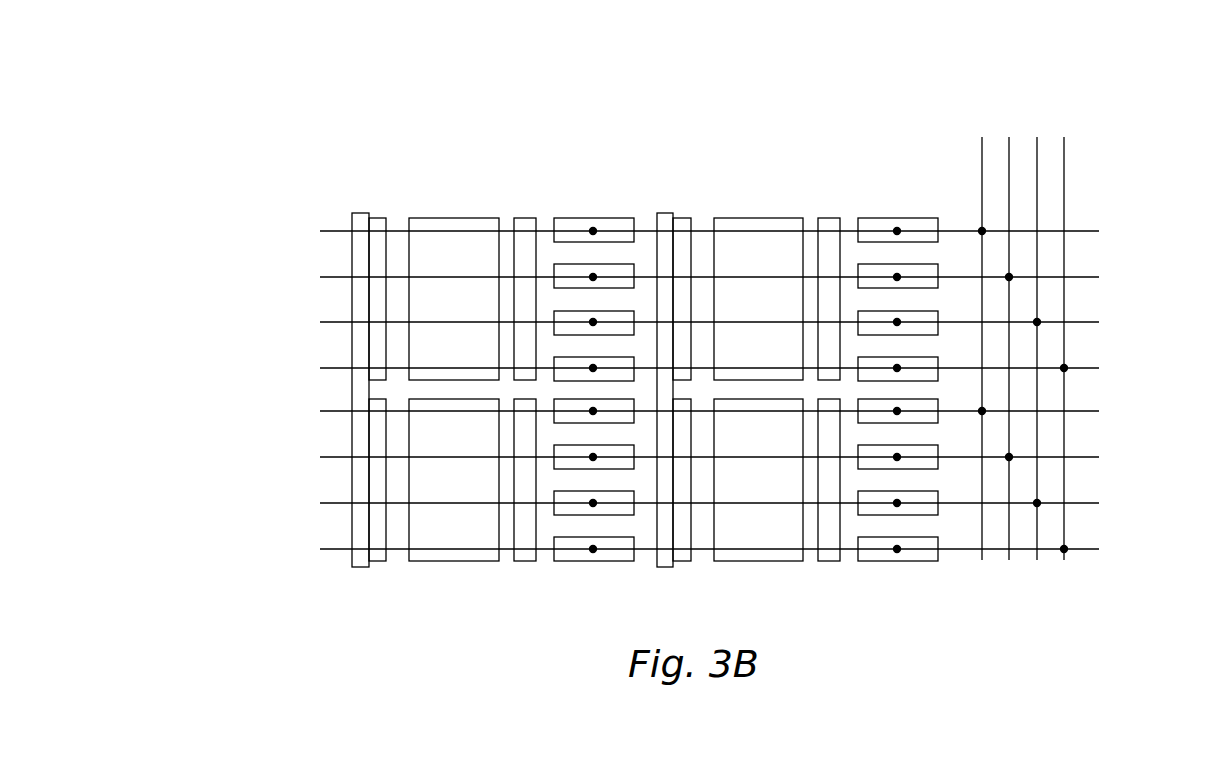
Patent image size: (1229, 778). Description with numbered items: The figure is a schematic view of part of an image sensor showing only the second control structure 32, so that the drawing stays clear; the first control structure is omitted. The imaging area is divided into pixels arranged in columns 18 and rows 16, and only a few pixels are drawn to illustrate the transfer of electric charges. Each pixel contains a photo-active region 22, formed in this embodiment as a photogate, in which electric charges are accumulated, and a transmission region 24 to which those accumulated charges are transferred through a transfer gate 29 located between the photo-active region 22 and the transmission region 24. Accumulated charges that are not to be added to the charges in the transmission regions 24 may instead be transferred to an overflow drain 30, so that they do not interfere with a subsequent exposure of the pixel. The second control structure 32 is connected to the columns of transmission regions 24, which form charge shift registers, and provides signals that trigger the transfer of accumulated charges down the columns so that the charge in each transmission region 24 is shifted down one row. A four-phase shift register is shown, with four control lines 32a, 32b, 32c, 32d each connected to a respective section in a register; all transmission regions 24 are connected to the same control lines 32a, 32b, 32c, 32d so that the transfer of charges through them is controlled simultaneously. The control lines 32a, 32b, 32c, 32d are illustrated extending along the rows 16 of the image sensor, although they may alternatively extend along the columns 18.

The rows 16 is at (297, 283).
The columns 18 is at (535, 122).
The photo-active region 22 is at (447, 248).
The transmission region 24 is at (625, 220).
The transfer gate 29 is at (520, 218).
The overflow drain 30 is at (360, 213).
The second control structure 32 is at (1043, 298).
The control line 32a is at (982, 148).
The control line 32b is at (1009, 145).
The control line 32c is at (1037, 145).
The control line 32d is at (1064, 145).